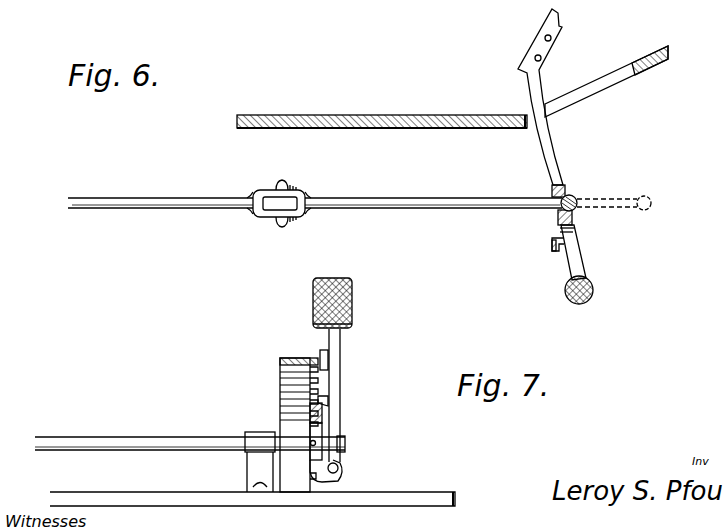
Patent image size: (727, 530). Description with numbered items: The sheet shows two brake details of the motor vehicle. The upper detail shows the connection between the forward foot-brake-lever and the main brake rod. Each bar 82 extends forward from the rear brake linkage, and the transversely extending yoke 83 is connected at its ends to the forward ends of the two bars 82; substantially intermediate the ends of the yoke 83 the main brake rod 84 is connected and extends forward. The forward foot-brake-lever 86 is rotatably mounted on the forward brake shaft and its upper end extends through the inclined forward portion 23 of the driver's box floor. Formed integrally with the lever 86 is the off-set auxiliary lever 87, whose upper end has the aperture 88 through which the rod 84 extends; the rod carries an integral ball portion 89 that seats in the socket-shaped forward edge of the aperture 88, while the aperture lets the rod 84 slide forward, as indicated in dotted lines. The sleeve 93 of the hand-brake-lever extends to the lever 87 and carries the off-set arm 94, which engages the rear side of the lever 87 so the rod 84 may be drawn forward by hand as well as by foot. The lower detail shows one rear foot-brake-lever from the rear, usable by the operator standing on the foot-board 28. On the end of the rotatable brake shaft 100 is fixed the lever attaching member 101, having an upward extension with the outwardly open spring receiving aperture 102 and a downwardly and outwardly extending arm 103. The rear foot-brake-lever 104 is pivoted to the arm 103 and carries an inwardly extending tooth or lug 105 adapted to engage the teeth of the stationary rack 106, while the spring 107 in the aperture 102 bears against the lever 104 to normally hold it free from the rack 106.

In FIG. 6, the inclined forward portion of the driver's box floor 23 is at (635, 61).
In FIG. 7, the foot-board 28 is at (413, 495).
In FIG. 6, the bar 82 is at (146, 200).
In FIG. 6, the yoke 83 is at (276, 206).
In FIG. 6, the main brake rod 84 is at (414, 202).
In FIG. 6, the forward foot-brake-lever 86 is at (550, 157).
In FIG. 6, the auxiliary lever 87 is at (575, 229).
In FIG. 6, the aperture 88 is at (558, 215).
In FIG. 6, the ball portion 89 is at (576, 197).
In FIG. 6, the sleeve 93 is at (593, 283).
In FIG. 6, the off-set arm 94 is at (561, 246).
In FIG. 7, the brake shaft 100 is at (138, 440).
In FIG. 7, the lever attaching member 101 is at (318, 438).
In FIG. 7, the spring receiving aperture 102 is at (326, 400).
In FIG. 7, the arm 103 is at (328, 475).
In FIG. 7, the rear foot-brake-lever 104 is at (337, 342).
In FIG. 7, the tooth or lug 105 is at (323, 352).
In FIG. 7, the stationary rack 106 is at (280, 388).
In FIG. 7, the spring 107 is at (320, 410).